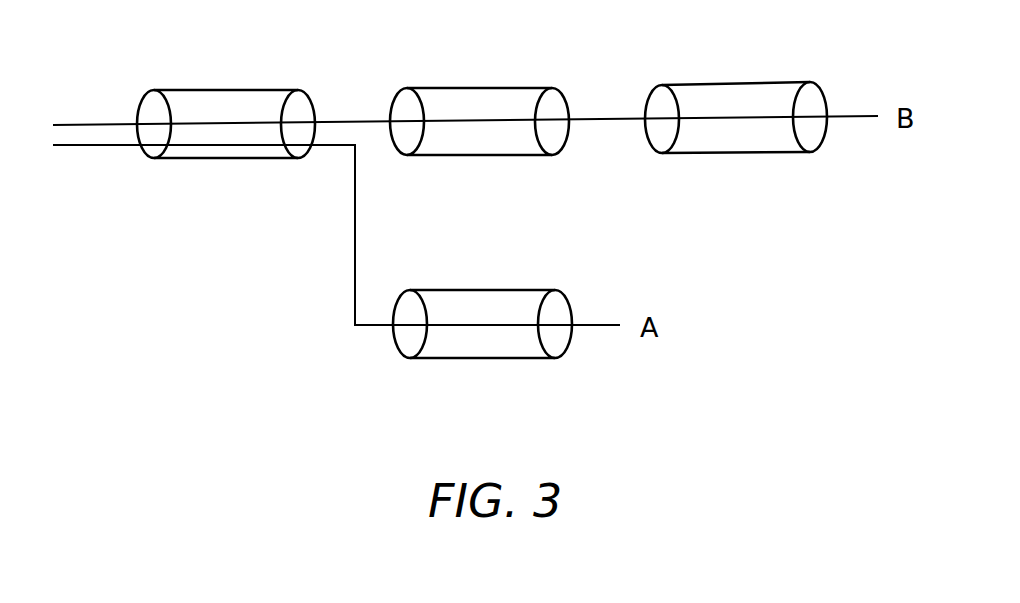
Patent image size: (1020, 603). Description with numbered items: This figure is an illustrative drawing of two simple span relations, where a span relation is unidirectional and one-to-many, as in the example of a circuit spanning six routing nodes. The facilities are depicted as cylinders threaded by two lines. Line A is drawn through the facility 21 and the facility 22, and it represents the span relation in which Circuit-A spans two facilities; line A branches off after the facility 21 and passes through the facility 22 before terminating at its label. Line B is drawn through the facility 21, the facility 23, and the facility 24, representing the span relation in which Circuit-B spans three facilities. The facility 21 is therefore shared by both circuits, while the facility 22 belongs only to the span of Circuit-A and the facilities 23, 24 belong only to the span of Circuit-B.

The facility 21 is at (218, 90).
The facility 22 is at (470, 290).
The facility 23 is at (458, 88).
The facility 24 is at (707, 84).